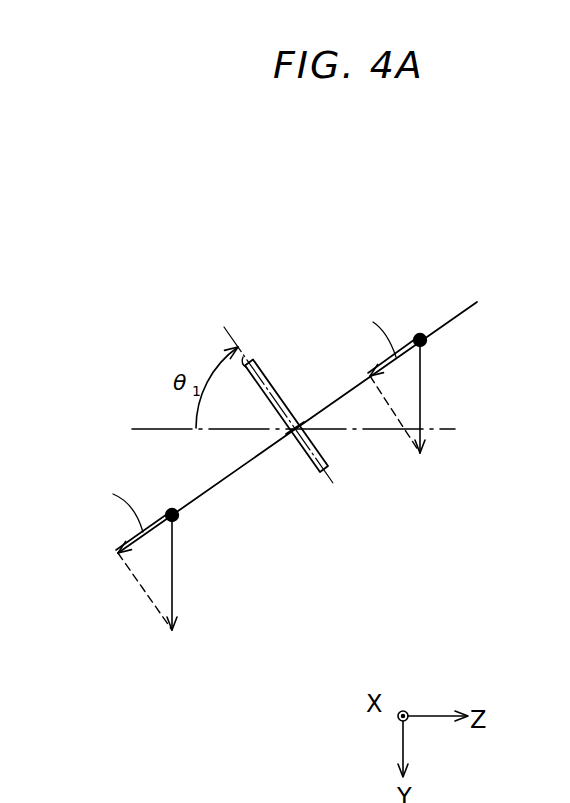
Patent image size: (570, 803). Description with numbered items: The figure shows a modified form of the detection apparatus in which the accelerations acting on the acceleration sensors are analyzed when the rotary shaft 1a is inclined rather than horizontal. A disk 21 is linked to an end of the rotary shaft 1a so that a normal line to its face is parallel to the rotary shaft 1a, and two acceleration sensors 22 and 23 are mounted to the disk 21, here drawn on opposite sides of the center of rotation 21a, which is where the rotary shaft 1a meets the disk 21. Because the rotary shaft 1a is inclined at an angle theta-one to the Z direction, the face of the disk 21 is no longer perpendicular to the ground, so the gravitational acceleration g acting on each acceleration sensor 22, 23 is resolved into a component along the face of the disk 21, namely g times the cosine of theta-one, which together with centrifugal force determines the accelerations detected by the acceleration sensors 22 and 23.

The rotary shaft 1a is at (271, 383).
The disk 21 is at (465, 313).
The center of rotation 21a is at (296, 434).
The acceleration sensor 22 is at (426, 342).
The acceleration sensor 23 is at (178, 517).